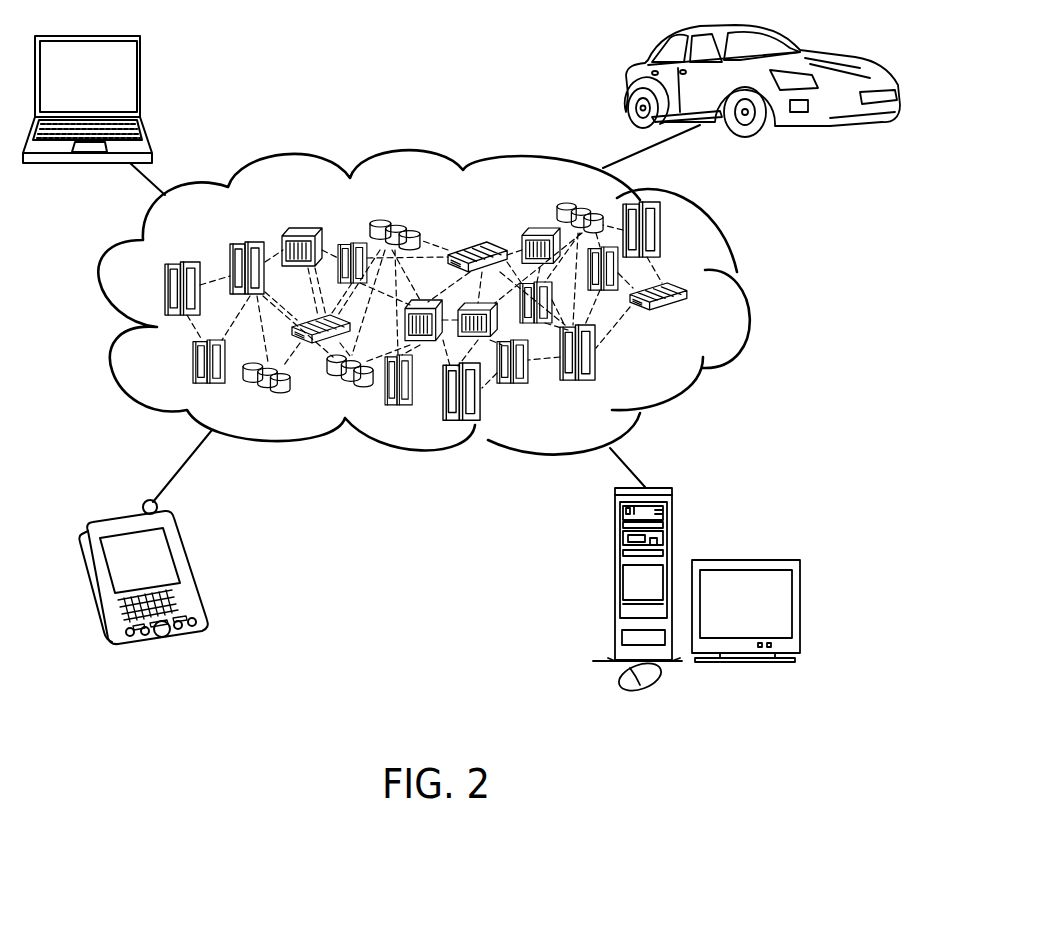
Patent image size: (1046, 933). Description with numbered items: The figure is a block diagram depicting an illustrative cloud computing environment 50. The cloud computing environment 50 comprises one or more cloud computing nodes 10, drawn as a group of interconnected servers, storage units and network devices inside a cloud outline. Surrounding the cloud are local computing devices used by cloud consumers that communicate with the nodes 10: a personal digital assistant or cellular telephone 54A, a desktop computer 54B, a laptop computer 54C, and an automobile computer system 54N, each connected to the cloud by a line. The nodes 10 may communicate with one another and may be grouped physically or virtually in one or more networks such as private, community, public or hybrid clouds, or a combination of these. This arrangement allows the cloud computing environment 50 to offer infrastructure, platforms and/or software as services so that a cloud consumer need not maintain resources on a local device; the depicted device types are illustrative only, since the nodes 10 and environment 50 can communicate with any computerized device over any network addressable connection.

The cloud computing nodes 10 is at (672, 375).
The cloud computing environment 50 is at (745, 299).
The personal digital assistant (PDA) or cellular telephone 54A is at (185, 547).
The desktop computer 54B is at (615, 536).
The laptop computer 54C is at (143, 78).
The automobile computer system 54N is at (625, 81).